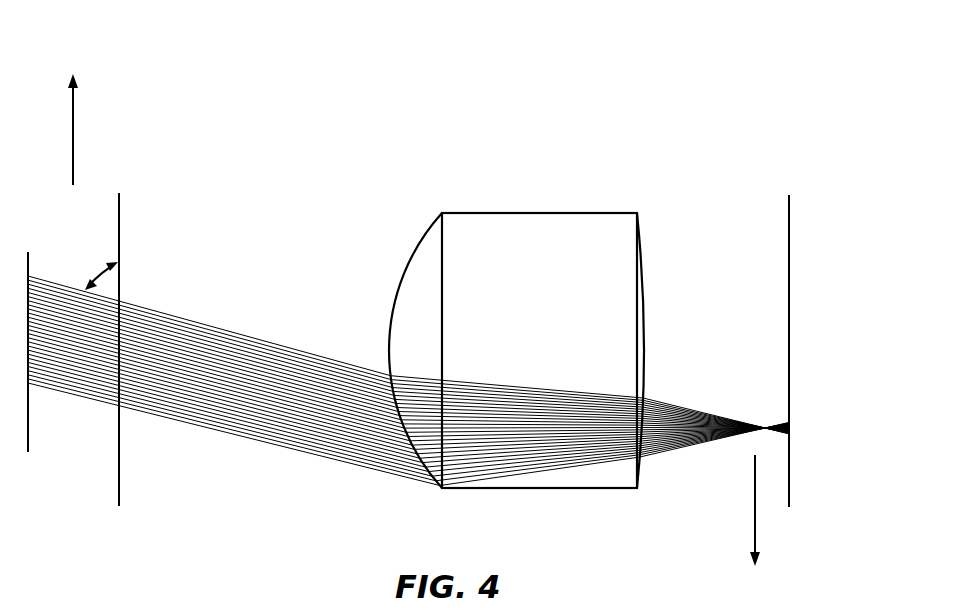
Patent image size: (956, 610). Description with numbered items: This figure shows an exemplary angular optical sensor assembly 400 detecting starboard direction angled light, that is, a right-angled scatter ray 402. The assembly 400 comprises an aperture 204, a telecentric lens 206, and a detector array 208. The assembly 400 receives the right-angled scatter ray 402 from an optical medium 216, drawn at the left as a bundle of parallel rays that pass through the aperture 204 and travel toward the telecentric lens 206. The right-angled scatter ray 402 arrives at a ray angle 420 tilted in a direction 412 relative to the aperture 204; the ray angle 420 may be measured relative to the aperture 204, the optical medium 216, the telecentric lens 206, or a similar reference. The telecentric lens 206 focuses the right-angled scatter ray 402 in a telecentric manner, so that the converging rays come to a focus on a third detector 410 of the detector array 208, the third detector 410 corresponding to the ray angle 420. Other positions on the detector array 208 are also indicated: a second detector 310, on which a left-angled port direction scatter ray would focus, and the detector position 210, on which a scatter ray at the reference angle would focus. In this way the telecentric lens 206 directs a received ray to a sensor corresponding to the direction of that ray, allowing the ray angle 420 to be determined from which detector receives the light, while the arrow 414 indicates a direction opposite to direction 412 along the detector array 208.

The angular optical sensor assembly 400 is at (767, 84).
The direction 412 is at (75, 118).
The aperture 204 is at (120, 193).
The optical medium 216 is at (29, 252).
The ray angle 420 is at (98, 272).
The right-angled scatter ray 402 is at (245, 333).
The telecentric lens 206 is at (540, 212).
The detector array 208 is at (788, 235).
The second detector 310 is at (790, 273).
The detector array 210 is at (790, 350).
The third detector 410 is at (790, 428).
The second direction arrow 414 is at (758, 517).